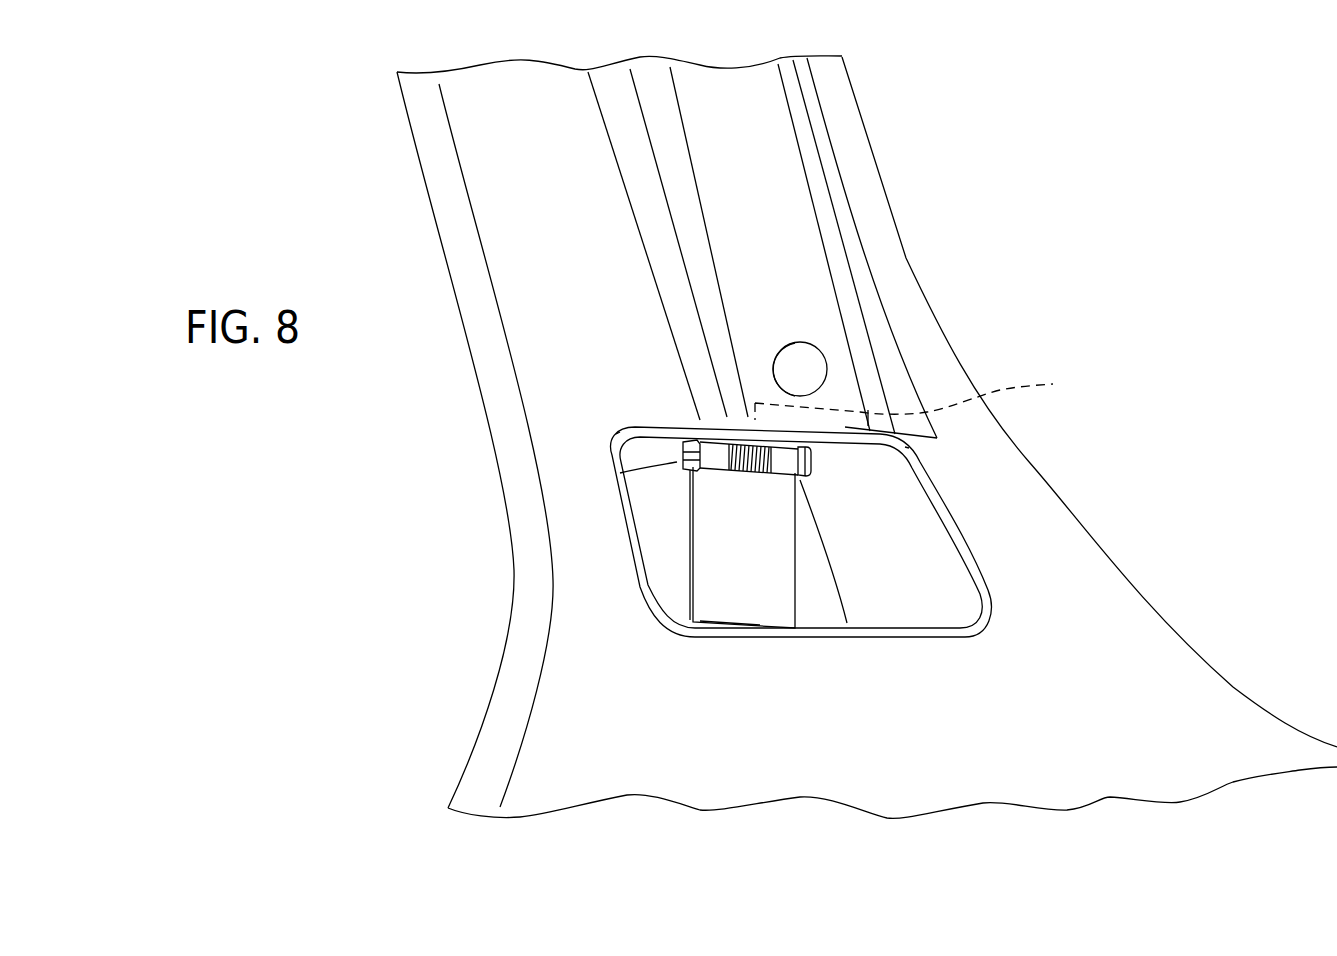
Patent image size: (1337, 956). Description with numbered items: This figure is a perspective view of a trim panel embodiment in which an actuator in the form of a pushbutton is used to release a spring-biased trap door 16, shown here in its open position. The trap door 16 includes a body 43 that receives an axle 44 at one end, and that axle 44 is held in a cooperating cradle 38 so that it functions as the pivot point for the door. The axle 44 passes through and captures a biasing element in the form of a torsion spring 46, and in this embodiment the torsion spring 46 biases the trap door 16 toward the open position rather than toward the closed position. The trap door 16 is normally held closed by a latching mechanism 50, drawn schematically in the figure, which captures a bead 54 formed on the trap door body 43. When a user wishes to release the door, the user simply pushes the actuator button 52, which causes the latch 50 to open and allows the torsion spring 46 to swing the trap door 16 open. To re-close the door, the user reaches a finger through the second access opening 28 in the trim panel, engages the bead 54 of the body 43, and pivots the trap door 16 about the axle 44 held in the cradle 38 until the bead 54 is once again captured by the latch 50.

The trap door 16 is at (680, 558).
The second access opening 28 is at (978, 578).
The cradle 38 is at (678, 467).
The body 43 is at (770, 537).
The axle 44 is at (682, 453).
The torsion spring 46 is at (778, 458).
The latching mechanism 50 is at (920, 399).
The actuator button 52 is at (808, 363).
The bead 54 is at (731, 622).